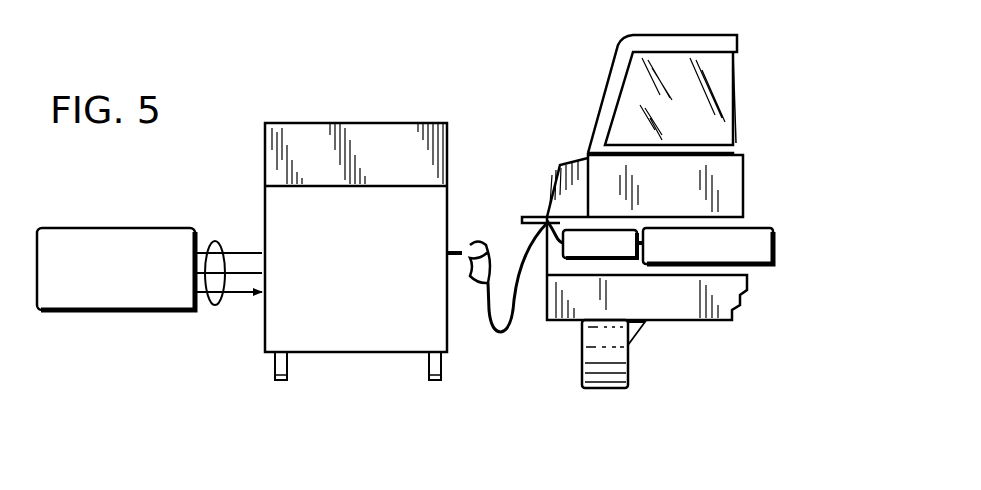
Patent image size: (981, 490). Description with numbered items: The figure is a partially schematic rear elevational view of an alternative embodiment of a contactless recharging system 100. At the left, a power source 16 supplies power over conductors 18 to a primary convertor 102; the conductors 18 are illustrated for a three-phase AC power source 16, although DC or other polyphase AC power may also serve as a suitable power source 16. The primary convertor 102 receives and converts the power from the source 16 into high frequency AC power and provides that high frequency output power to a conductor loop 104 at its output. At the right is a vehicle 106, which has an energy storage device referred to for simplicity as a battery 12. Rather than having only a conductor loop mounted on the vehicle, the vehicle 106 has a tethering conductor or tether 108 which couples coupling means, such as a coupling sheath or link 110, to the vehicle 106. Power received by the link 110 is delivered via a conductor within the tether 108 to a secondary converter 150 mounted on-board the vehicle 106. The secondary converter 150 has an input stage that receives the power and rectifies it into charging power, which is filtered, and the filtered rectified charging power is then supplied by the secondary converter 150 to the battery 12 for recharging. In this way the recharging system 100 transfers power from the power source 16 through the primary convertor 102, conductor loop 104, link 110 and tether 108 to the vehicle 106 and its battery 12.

The contactless recharging system 100 is at (185, 383).
The power source 16 is at (53, 297).
The conductors 18 is at (216, 305).
The primary convertor 102 is at (372, 337).
The conductor loop 104 is at (455, 246).
The link 110 is at (487, 252).
The tether 108 is at (504, 333).
The vehicle 106 is at (777, 84).
The secondary converter 150 is at (589, 230).
The battery 12 is at (765, 265).